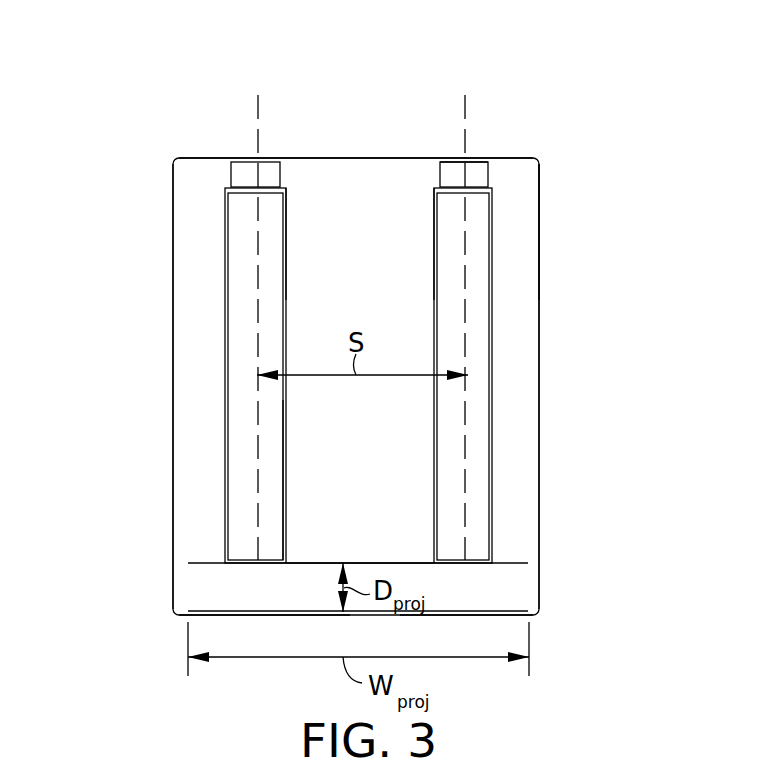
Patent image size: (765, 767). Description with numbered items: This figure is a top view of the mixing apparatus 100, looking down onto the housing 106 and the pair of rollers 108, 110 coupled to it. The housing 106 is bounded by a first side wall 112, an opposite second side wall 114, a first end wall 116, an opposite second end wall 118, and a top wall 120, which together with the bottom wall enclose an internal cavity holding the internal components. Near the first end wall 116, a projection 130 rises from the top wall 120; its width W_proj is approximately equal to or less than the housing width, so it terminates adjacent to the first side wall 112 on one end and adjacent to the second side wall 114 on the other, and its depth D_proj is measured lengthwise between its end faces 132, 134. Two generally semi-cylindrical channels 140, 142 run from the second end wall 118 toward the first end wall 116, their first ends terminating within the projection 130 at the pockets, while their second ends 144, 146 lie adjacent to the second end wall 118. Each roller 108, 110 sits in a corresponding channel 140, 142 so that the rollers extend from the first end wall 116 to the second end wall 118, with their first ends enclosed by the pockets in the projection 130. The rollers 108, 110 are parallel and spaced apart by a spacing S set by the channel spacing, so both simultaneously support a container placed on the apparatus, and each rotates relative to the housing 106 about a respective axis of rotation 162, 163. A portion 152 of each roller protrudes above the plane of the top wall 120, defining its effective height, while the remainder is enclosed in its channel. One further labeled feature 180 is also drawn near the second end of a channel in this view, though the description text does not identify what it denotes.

The mixing apparatus 100 is at (123, 105).
The housing 106 is at (518, 187).
The roller 108 is at (472, 278).
The roller 110 is at (244, 278).
The first side wall 112 is at (540, 388).
The second side wall 114 is at (173, 403).
The first end wall 116 is at (392, 612).
The second end wall 118 is at (348, 158).
The top wall 120 is at (385, 531).
The projection 130 is at (510, 590).
The end face 132 is at (210, 611).
The end face 134 is at (512, 562).
The channel 140 is at (435, 216).
The channel 142 is at (288, 212).
The second end 144 is at (490, 170).
The second end 146 is at (222, 160).
The portion of the rollers 152 is at (272, 480).
The axis of rotation 162 is at (463, 95).
The axis of rotation 163 is at (257, 95).
The tip top surface 180 is at (471, 168).